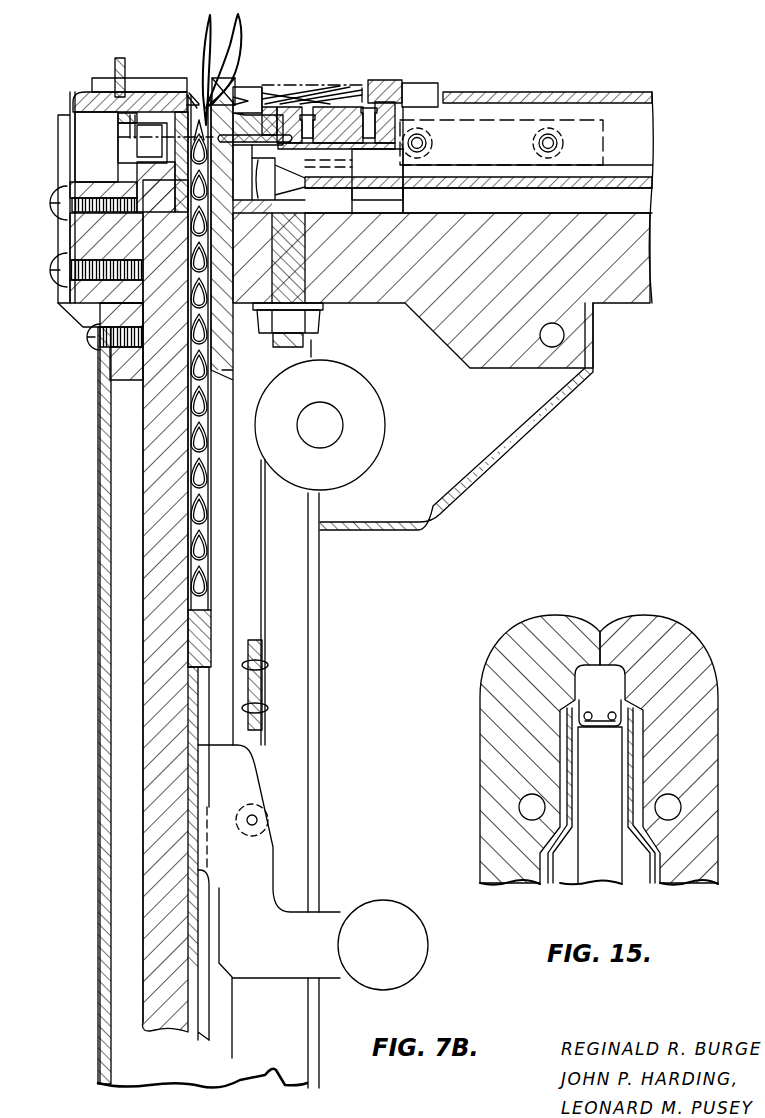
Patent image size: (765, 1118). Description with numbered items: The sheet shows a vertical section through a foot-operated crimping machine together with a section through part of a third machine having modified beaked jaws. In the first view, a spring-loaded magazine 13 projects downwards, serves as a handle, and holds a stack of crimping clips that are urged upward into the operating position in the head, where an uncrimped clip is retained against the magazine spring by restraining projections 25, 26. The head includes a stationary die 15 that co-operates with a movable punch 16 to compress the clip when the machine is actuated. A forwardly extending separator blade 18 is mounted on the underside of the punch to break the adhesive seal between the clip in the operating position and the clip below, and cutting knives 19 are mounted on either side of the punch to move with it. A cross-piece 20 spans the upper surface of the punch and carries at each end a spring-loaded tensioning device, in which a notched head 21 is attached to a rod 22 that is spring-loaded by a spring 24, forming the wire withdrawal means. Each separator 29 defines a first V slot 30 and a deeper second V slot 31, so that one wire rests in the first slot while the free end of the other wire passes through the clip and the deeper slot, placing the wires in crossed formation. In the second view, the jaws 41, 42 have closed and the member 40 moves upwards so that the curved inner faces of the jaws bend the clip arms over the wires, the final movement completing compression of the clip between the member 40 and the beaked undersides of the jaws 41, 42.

In FIG. 7B, the spring-loaded magazine 13 is at (218, 548).
In FIG. 7B, the stationary die 15 is at (162, 130).
In FIG. 7B, the movable punch 16 is at (368, 106).
In FIG. 7B, the separator blade 18 is at (270, 128).
In FIG. 7B, the cutting knives 19 is at (268, 112).
In FIG. 7B, the cross-piece 20 is at (385, 90).
In FIG. 7B, the notched head 21 is at (247, 92).
In FIG. 7B, the rod 22 is at (322, 148).
In FIG. 7B, the spring 24 is at (314, 150).
In FIG. 7B, the restraining projection 25 is at (172, 92).
In FIG. 7B, the restraining projection 26 is at (76, 100).
In FIG. 7B, the separator 29 is at (205, 30).
In FIG. 7B, the first V slot 30 is at (197, 84).
In FIG. 7B, the second V slot 31 is at (240, 80).
In FIG. 15, the member 40 is at (598, 850).
In FIG. 15, the jaw 41 is at (533, 632).
In FIG. 15, the jaw 42 is at (670, 632).